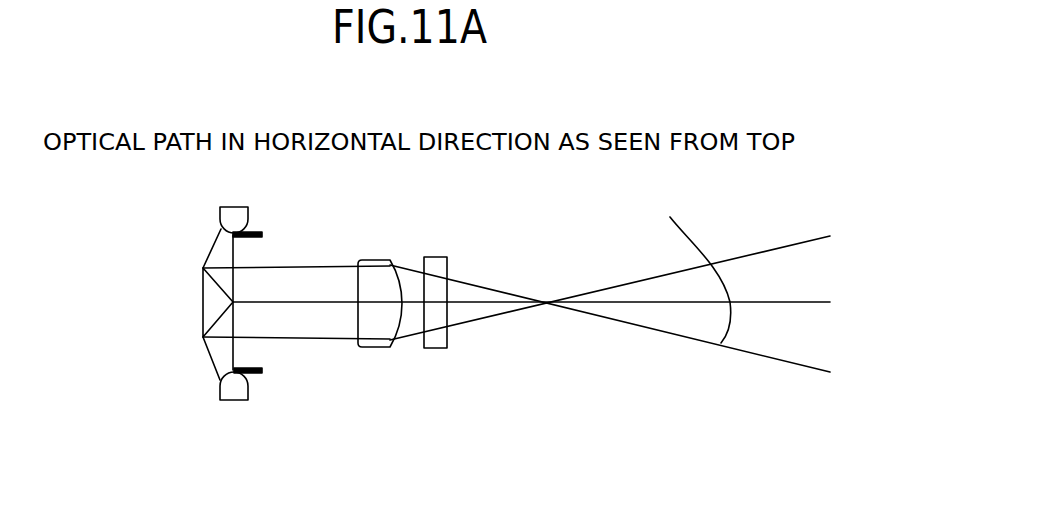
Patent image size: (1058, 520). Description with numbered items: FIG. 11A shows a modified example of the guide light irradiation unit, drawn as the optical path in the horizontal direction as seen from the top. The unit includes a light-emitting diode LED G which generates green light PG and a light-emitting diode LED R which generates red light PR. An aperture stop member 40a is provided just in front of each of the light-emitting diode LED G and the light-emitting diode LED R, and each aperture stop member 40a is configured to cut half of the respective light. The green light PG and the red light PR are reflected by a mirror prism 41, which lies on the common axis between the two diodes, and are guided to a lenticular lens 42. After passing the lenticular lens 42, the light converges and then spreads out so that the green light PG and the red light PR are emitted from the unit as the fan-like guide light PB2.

The aperture stop member 40a is at (258, 245).
The mirror prism 41 is at (212, 307).
The lenticular lens 42 is at (434, 255).
The light-emitting diode LED G is at (231, 205).
The light-emitting diode LED R is at (230, 402).
The green light PG is at (333, 266).
The red light PR is at (332, 340).
The guide light PB2 is at (625, 283).